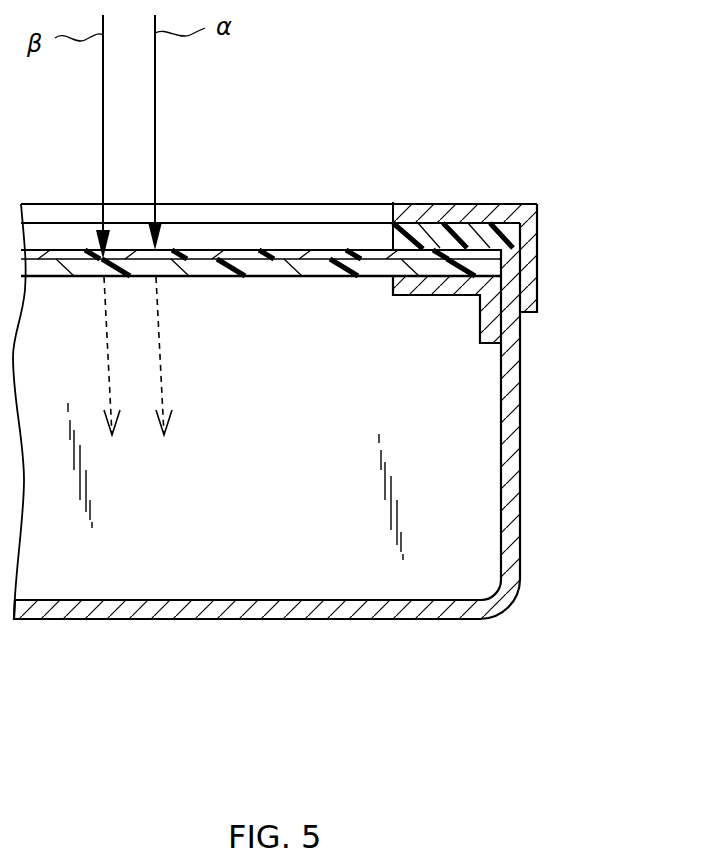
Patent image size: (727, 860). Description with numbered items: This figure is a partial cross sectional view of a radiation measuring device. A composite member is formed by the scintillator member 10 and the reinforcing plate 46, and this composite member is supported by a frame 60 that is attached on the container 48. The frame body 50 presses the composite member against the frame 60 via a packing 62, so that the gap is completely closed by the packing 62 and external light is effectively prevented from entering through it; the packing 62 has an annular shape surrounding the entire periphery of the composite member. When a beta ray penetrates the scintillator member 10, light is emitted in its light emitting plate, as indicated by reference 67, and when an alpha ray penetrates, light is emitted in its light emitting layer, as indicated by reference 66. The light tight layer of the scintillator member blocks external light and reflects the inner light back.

The scintillator member 10 is at (219, 248).
The reinforcing plate 46 is at (308, 278).
The container 48 is at (521, 428).
The frame body 50 is at (505, 204).
The frame 60 is at (446, 296).
The packing 62 is at (378, 212).
The light emitted by penetrating alpha ray 66 is at (163, 372).
The light emitted by penetrating beta ray 67 is at (105, 360).